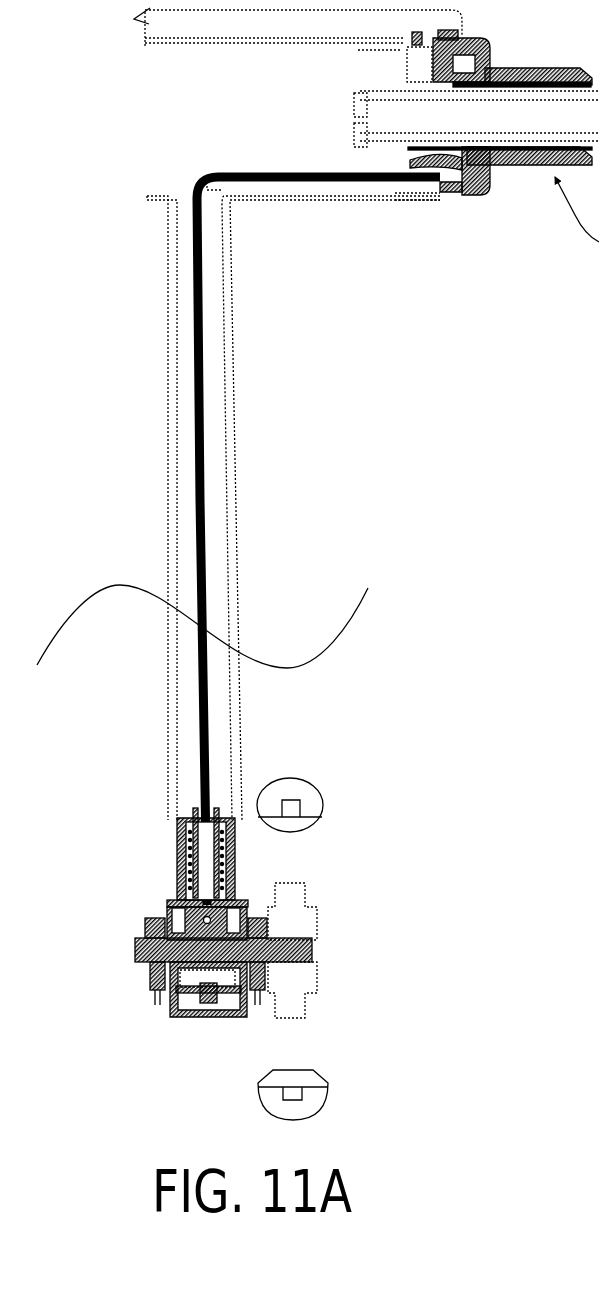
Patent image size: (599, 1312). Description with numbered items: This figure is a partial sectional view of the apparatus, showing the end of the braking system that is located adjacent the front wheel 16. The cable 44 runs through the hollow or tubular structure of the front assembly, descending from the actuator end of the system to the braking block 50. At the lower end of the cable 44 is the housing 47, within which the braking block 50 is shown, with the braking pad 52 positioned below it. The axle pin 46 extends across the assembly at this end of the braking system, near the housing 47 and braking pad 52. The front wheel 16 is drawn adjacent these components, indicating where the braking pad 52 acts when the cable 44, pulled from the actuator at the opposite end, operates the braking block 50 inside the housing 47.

The cable 44 is at (207, 388).
The front wheel 16 is at (313, 792).
The housing 47 is at (177, 822).
The braking block 50 is at (182, 893).
The axle pin 46 is at (313, 950).
The braking pad 52 is at (189, 1003).